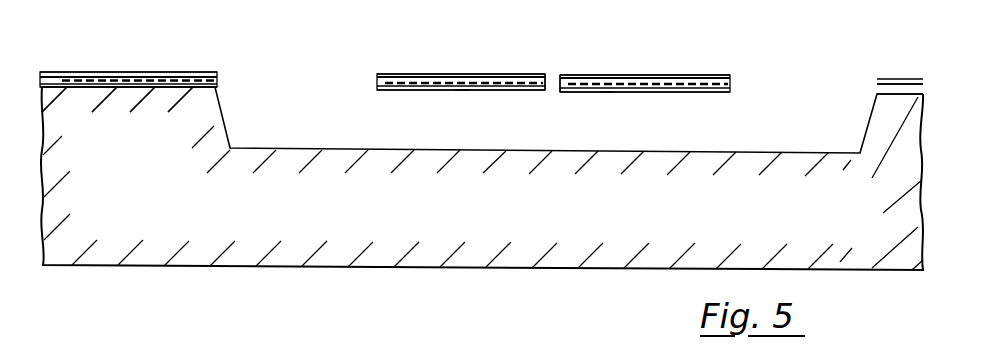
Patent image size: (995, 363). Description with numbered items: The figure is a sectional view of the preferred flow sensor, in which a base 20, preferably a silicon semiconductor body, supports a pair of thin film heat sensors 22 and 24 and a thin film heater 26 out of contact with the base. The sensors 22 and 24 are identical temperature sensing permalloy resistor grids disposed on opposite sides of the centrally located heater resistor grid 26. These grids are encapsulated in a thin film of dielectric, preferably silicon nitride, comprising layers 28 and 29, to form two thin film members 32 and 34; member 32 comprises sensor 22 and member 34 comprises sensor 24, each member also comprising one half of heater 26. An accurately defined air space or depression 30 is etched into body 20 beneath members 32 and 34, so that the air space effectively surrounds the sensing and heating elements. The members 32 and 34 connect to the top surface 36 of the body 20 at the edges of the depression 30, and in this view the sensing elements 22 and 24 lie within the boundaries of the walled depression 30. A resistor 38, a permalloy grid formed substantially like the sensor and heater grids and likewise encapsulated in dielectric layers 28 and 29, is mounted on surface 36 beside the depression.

The base 20 is at (496, 218).
The thin film heat sensor 22 is at (485, 66).
The thin film heat sensor 24 is at (725, 66).
The thin film heater 26 is at (610, 66).
The dielectric layer 28 is at (218, 75).
The dielectric layer 29 is at (218, 87).
The depression 30 is at (536, 141).
The thin film member 32 is at (466, 98).
The thin film member 34 is at (606, 97).
The top surface 36 is at (170, 100).
The resistor 38 is at (193, 66).